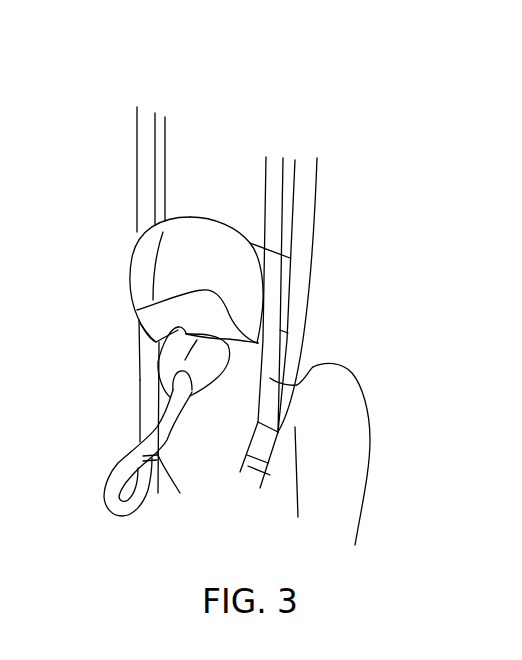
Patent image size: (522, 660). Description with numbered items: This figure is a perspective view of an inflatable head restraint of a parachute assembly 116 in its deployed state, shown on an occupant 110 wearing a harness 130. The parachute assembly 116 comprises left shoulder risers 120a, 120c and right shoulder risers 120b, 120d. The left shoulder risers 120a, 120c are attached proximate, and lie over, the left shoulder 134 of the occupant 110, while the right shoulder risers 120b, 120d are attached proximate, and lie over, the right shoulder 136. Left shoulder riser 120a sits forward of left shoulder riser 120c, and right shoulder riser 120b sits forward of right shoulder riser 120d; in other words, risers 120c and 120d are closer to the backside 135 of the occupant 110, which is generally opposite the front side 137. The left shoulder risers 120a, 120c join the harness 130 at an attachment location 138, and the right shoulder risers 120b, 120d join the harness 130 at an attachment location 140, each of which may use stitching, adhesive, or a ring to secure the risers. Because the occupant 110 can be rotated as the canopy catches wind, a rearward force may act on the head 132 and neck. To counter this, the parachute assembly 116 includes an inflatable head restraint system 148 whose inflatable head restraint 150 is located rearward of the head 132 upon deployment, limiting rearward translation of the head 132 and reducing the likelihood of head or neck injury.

The occupant 110 is at (116, 255).
The parachute assembly 116 is at (138, 86).
The left shoulder riser 120a is at (300, 366).
The right shoulder riser 120b is at (139, 147).
The left shoulder riser 120c is at (300, 313).
The right shoulder riser 120d is at (161, 167).
The harness 130 is at (241, 477).
The head 132 is at (195, 266).
The left shoulder 134 is at (338, 424).
The backside 135 is at (374, 429).
The right shoulder 136 is at (140, 402).
The front side 137 is at (217, 437).
The attachment location 138 is at (283, 434).
The attachment location 140 is at (134, 415).
The inflatable head restraint system 148 is at (251, 236).
The inflatable head restraint 150 is at (288, 268).